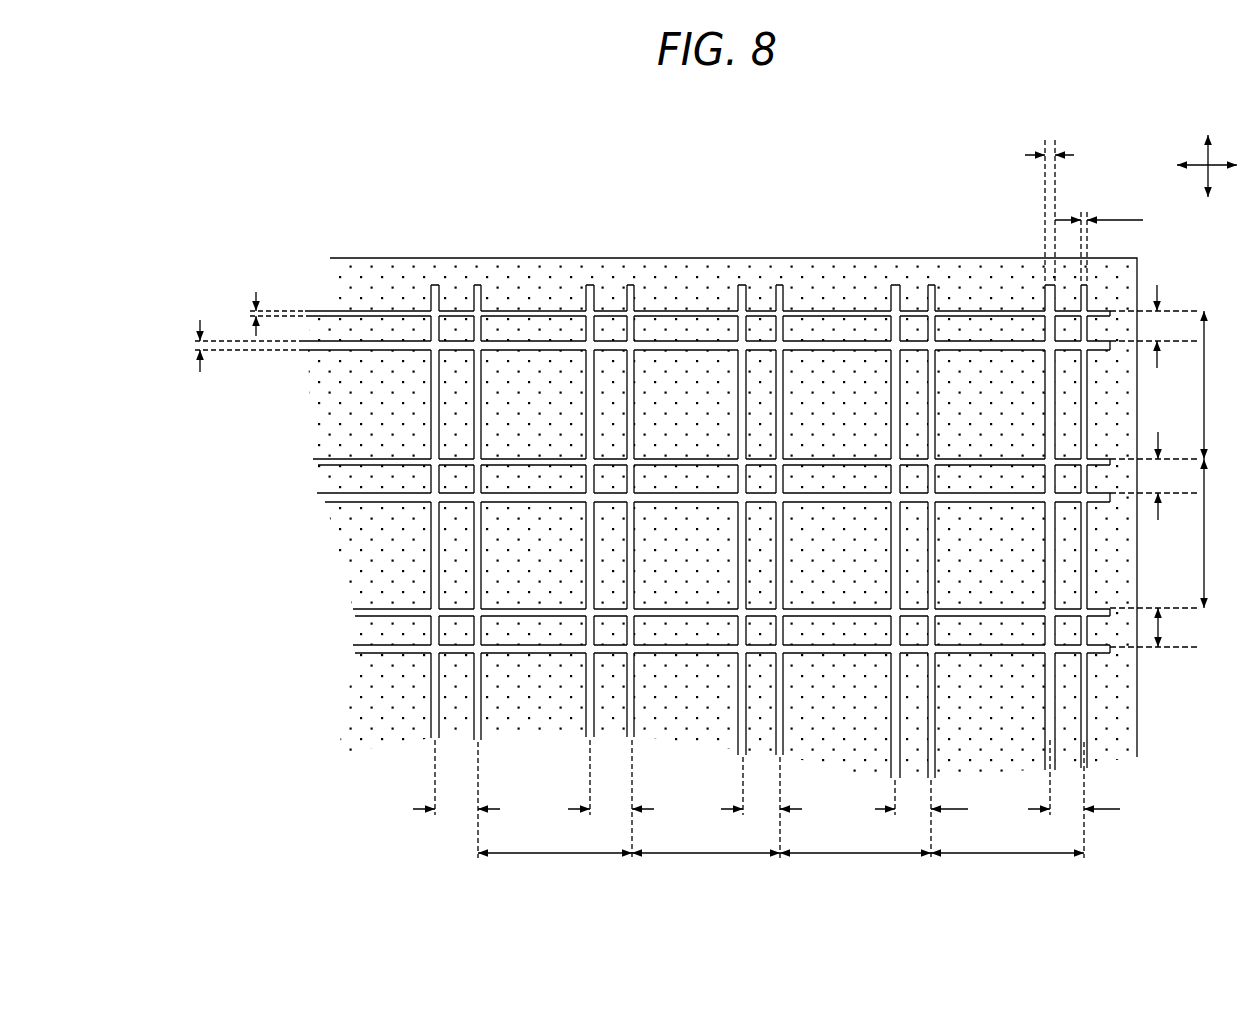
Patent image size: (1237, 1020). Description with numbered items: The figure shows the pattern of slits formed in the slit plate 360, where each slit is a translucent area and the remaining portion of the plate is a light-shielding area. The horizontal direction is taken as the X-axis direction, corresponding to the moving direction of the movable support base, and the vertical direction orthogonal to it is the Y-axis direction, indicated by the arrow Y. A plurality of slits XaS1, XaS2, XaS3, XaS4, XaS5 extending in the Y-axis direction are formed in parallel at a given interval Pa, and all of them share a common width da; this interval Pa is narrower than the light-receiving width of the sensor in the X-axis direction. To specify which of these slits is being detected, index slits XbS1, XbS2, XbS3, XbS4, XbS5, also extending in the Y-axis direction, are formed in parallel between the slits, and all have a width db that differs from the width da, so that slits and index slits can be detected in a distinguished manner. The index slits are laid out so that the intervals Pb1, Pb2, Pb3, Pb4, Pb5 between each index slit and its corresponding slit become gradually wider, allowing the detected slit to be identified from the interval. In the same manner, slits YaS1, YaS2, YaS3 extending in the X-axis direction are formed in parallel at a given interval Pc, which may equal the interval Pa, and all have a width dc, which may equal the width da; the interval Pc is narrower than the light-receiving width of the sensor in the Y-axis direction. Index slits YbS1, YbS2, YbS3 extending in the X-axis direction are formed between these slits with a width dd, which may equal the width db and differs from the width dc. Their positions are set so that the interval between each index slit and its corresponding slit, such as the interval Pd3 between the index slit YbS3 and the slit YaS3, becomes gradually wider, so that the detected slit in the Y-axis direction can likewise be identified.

The slit plate 360 is at (327, 228).
The slit XaS1 is at (1085, 292).
The slit XaS2 is at (935, 292).
The slit XaS3 is at (784, 292).
The slit XaS4 is at (634, 292).
The slit XaS5 is at (480, 292).
The index slit XbS1 is at (1047, 295).
The index slit XbS2 is at (893, 295).
The index slit XbS3 is at (740, 295).
The index slit XbS4 is at (588, 295).
The index slit XbS5 is at (433, 292).
The slit YaS1 is at (345, 311).
The slit YaS2 is at (361, 459).
The slit YaS3 is at (387, 608).
The index slit YbS1 is at (335, 352).
The index slit YbS2 is at (365, 503).
The index slit YbS3 is at (393, 654).
The interval Pa is at (781, 866).
The interval Pb1 is at (1114, 571).
The interval Pb2 is at (1037, 645).
The interval Pb3 is at (761, 807).
The interval Pb4 is at (611, 799).
The interval Pb5 is at (456, 799).
The interval Pc is at (1216, 459).
The interval Pd3 is at (1155, 631).
The width da is at (1099, 237).
The width db is at (1064, 205).
The width dc is at (261, 314).
The width dd is at (231, 346).
The Y-axis direction Y is at (1207, 151).